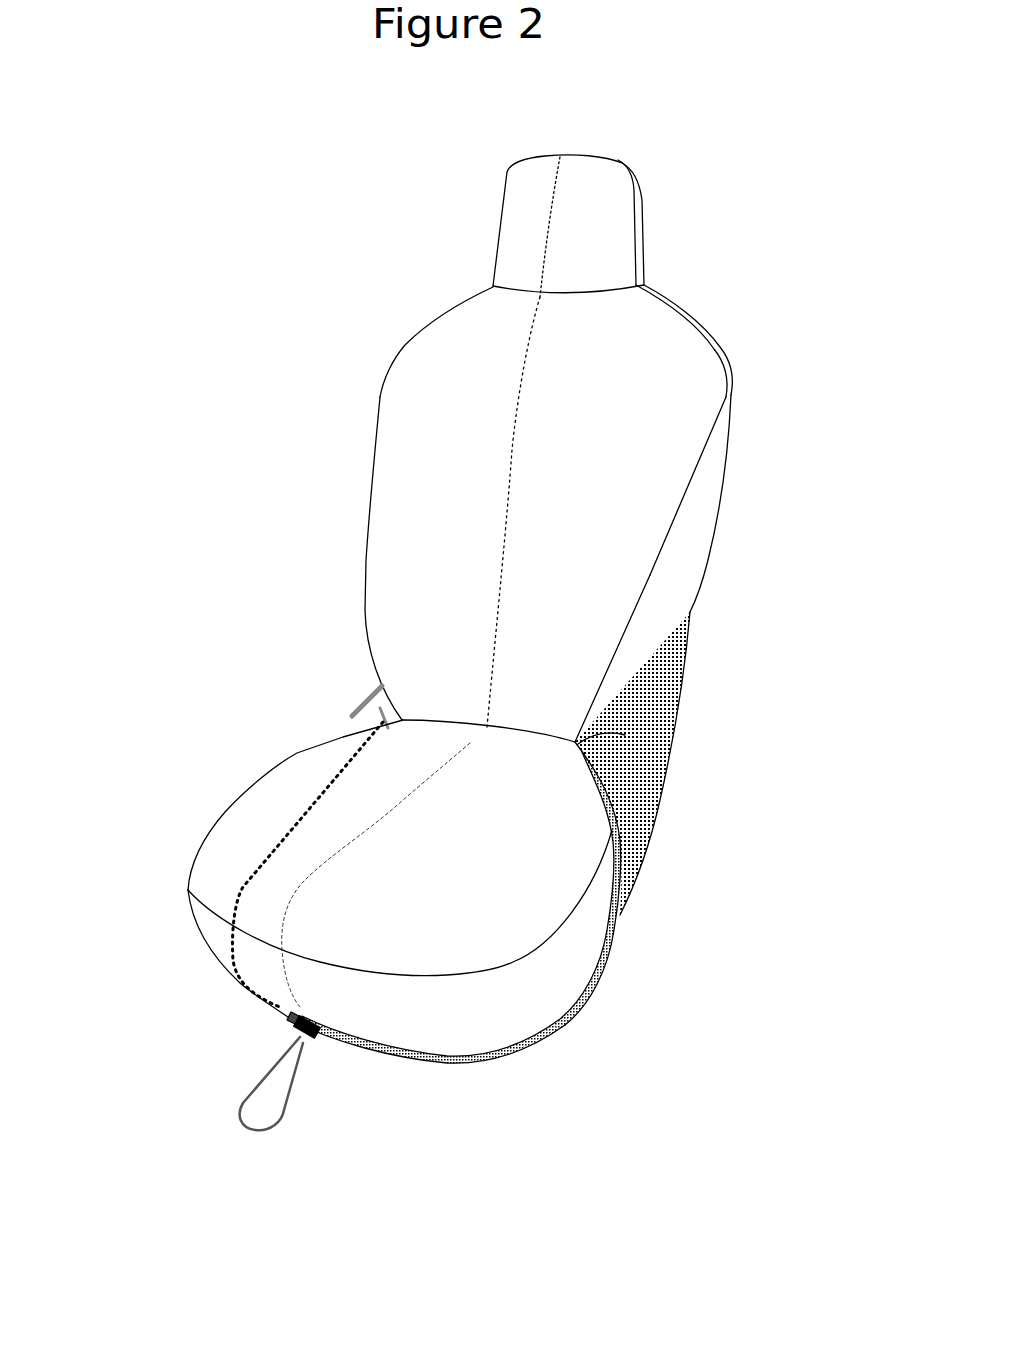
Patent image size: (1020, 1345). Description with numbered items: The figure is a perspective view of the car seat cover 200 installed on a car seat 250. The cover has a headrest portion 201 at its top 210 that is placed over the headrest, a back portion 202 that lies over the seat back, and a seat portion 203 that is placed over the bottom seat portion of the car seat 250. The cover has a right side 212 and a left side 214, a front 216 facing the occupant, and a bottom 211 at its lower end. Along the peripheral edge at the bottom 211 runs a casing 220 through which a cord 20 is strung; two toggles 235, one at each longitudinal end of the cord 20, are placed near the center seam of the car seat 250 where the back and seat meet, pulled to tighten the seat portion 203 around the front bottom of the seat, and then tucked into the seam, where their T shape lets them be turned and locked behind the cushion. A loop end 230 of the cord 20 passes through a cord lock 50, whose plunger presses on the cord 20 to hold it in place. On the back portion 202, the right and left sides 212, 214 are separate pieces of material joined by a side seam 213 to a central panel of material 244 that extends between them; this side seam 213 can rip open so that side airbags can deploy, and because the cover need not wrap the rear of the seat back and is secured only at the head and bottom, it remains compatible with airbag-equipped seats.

The cord 20 is at (565, 1030).
The cord lock 50 is at (312, 1040).
The car seat cover 200 is at (383, 372).
The headrest portion 201 is at (620, 202).
The back portion 202 is at (645, 335).
The seat portion 203 is at (212, 820).
The top 210 is at (586, 158).
The bottom 211 is at (437, 1067).
The right side 212 is at (375, 450).
The side seam 213 is at (660, 548).
The left side 214 is at (703, 483).
The front 216 is at (435, 538).
The casing 220 is at (610, 925).
The loop end 230 is at (248, 1125).
The toggle 235 is at (625, 735).
The central panel of material 244 is at (620, 401).
The car seat 250 is at (668, 660).